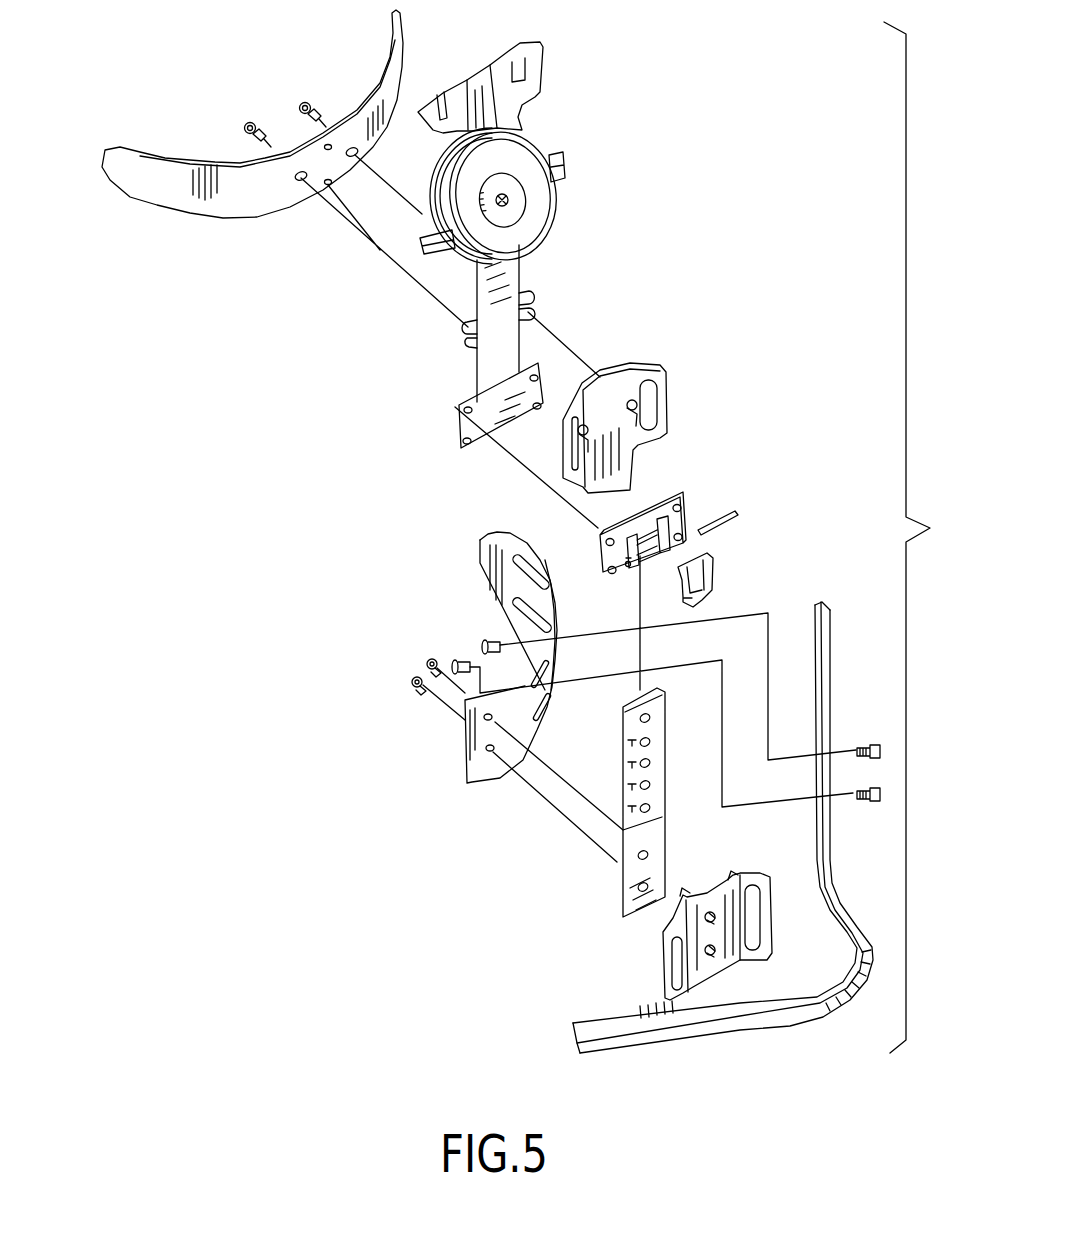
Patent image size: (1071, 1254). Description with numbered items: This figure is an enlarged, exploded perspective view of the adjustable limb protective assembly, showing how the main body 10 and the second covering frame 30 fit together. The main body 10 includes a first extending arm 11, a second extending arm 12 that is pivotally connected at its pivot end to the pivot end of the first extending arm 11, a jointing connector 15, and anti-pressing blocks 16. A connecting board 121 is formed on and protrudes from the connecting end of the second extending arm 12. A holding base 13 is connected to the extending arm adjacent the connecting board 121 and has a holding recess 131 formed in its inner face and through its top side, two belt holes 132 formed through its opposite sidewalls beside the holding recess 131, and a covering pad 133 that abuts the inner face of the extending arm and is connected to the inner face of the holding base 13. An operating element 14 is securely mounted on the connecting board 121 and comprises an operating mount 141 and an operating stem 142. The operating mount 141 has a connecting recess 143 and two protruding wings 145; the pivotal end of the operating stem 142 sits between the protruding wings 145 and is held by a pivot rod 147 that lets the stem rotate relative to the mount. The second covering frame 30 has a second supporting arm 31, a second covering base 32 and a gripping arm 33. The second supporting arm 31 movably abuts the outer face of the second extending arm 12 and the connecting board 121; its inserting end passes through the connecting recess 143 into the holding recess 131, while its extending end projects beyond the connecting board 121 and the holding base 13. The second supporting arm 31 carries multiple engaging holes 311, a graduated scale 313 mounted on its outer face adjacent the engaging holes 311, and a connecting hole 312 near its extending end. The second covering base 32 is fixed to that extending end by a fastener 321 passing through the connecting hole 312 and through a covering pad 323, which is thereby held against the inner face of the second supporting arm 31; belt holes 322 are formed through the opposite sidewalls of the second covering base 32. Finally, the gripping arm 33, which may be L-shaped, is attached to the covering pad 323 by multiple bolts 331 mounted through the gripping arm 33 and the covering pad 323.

The main body 10 is at (544, 154).
The first extending arm 11 is at (520, 118).
The second extending arm 12 is at (468, 352).
The connecting board 121 is at (467, 427).
The holding base 13 is at (658, 396).
The holding recess 131 is at (625, 366).
The belt holes 132 is at (647, 395).
The covering pad 133 is at (230, 207).
The operating element 14 is at (713, 538).
The operating mount 141 is at (692, 503).
The operating stem 142 is at (717, 577).
The connecting recess 143 is at (660, 507).
The protruding wings 145 is at (630, 569).
The pivot rod 147 is at (717, 527).
The jointing connector 15 is at (528, 223).
The anti-pressing blocks 16 is at (560, 177).
The second covering frame 30 is at (614, 814).
The second supporting arm 31 is at (612, 826).
The engaging holes 311 is at (643, 722).
The connecting hole 312 is at (637, 890).
The graduated scale 313 is at (630, 744).
The second covering base 32 is at (709, 937).
The fastener 321 is at (413, 683).
The belt holes 322 is at (753, 920).
The covering pad 323 is at (468, 752).
The gripping arm 33 is at (728, 849).
The bolts 331 is at (865, 745).